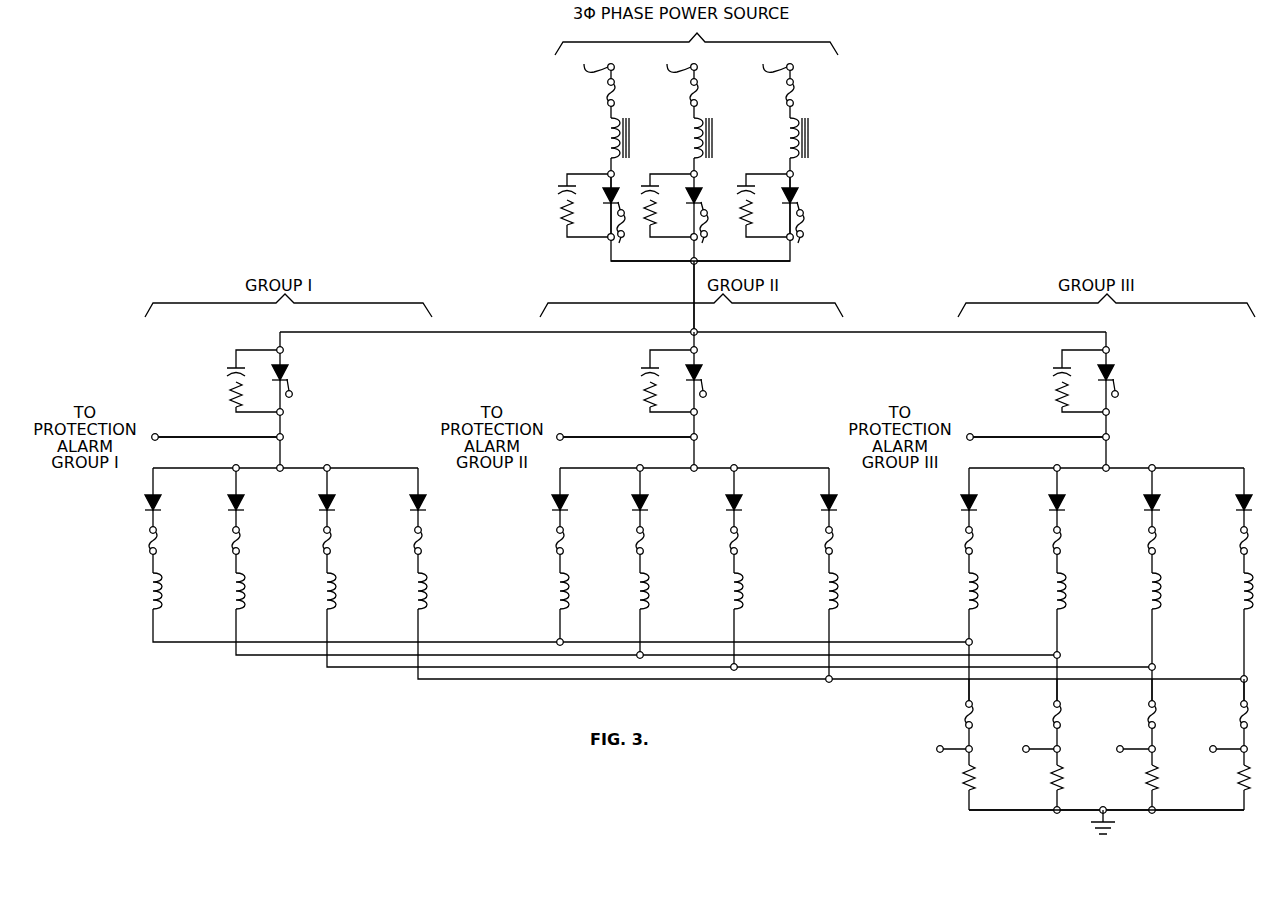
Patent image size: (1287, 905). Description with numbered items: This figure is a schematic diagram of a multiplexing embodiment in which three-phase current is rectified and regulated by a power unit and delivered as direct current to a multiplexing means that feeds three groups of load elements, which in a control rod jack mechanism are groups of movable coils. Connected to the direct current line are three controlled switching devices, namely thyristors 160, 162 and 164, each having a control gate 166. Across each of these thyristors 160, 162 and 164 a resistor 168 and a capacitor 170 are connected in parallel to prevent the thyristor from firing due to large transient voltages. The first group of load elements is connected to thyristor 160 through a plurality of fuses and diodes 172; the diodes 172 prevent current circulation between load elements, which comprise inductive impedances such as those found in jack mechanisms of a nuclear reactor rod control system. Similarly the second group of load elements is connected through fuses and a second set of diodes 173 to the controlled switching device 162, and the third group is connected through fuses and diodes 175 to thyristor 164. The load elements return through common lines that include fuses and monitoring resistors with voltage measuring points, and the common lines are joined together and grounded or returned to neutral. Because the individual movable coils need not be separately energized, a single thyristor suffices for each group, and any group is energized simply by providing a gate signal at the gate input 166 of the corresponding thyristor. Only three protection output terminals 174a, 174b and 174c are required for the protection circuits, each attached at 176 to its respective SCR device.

The capacitor 170 is at (227, 371).
The resistor 168 is at (229, 395).
The thyristor 160 is at (289, 379).
The thyristor 162 is at (703, 379).
The thyristor 164 is at (1115, 379).
The control gate 166 is at (293, 396).
The protection output terminal 174a is at (157, 435).
The protection output terminal 174b is at (562, 435).
The protection output terminal 174c is at (972, 435).
The attachment point 176 is at (286, 441).
The diode 172 is at (226, 505).
The diode 173 is at (631, 505).
The diode 175 is at (1044, 505).